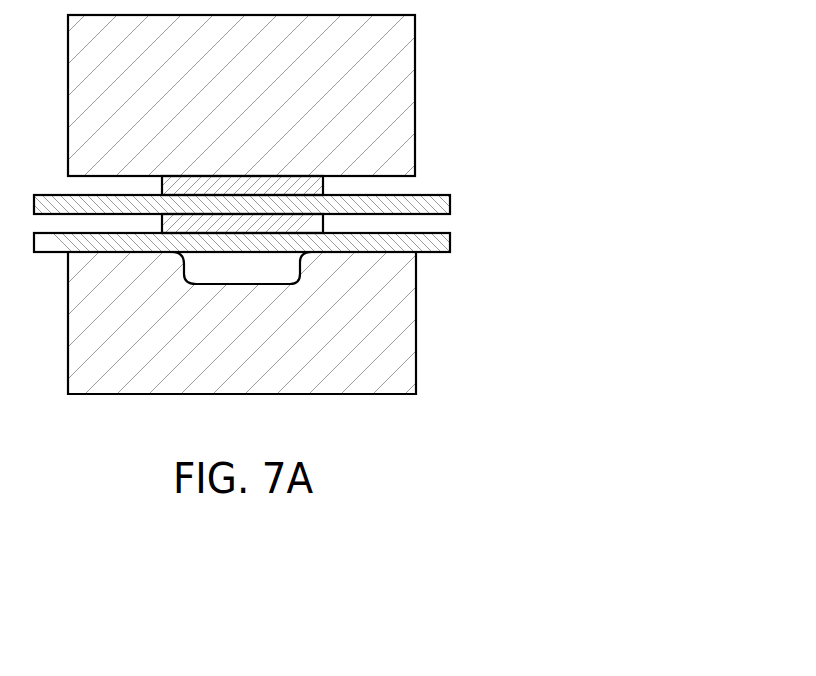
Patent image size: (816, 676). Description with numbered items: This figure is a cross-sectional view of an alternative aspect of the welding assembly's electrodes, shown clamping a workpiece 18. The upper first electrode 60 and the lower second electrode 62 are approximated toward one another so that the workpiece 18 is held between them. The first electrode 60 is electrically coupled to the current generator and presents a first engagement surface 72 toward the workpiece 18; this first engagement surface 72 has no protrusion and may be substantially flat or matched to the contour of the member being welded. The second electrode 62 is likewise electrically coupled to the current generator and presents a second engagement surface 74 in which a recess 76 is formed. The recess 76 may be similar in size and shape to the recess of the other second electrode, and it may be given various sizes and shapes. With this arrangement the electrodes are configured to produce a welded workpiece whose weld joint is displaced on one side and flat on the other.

The first electrode 60 is at (415, 36).
The second electrode 62 is at (416, 337).
The workpiece 18 is at (437, 178).
The first engagement surface 72 is at (78, 178).
The second engagement surface 74 is at (78, 250).
The recess 76 is at (192, 278).